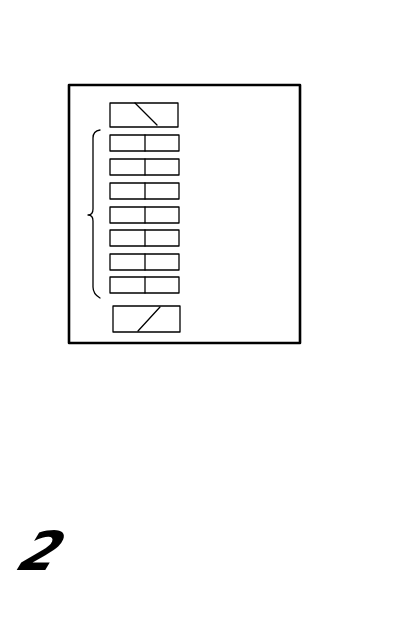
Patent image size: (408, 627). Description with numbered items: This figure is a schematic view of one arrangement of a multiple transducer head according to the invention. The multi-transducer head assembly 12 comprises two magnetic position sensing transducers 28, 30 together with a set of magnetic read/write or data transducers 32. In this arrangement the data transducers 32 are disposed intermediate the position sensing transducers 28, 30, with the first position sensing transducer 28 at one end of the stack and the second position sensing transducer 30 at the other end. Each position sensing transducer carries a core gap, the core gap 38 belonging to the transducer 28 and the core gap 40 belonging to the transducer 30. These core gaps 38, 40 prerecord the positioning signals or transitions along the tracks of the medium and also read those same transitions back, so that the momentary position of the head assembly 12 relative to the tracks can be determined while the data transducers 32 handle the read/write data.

The multi-transducer head assembly 12 is at (300, 147).
The magnetic position sensing transducer 28 is at (178, 118).
The core gap 38 is at (147, 116).
The magnetic read/write data transducers 32 is at (90, 215).
The magnetic position sensing transducer 30 is at (180, 322).
The core gap 40 is at (150, 322).